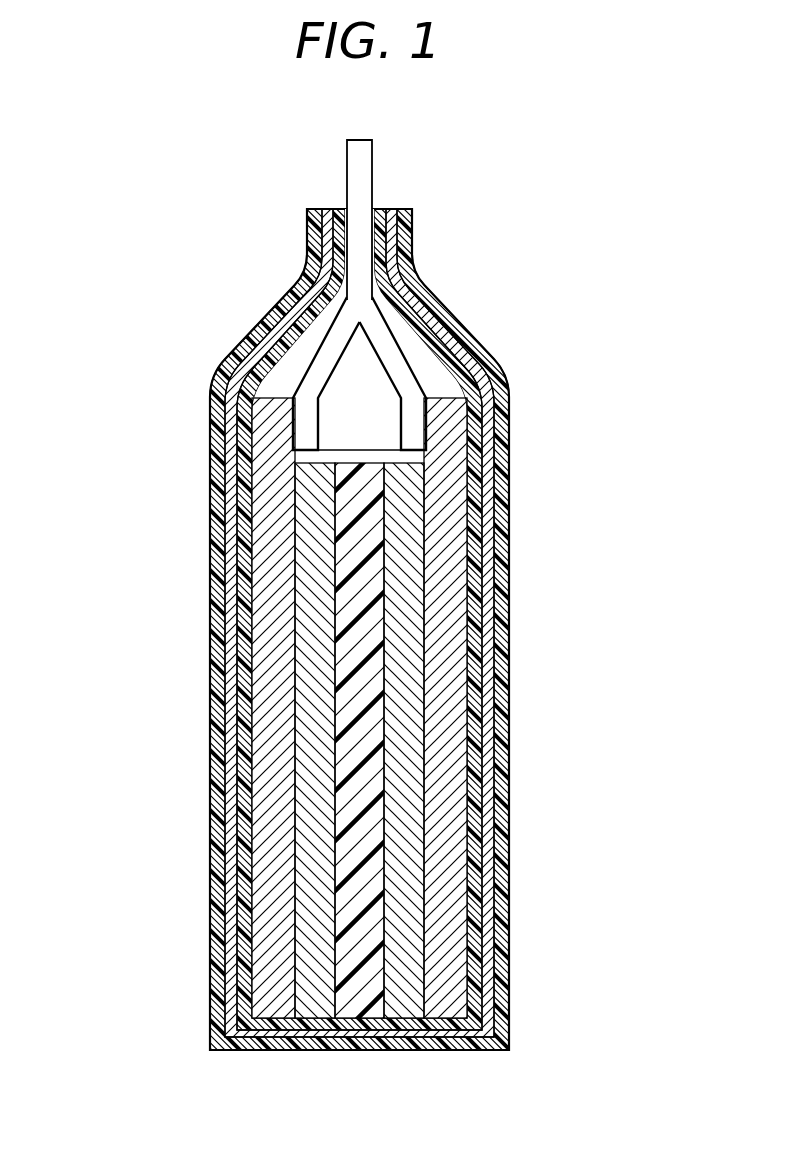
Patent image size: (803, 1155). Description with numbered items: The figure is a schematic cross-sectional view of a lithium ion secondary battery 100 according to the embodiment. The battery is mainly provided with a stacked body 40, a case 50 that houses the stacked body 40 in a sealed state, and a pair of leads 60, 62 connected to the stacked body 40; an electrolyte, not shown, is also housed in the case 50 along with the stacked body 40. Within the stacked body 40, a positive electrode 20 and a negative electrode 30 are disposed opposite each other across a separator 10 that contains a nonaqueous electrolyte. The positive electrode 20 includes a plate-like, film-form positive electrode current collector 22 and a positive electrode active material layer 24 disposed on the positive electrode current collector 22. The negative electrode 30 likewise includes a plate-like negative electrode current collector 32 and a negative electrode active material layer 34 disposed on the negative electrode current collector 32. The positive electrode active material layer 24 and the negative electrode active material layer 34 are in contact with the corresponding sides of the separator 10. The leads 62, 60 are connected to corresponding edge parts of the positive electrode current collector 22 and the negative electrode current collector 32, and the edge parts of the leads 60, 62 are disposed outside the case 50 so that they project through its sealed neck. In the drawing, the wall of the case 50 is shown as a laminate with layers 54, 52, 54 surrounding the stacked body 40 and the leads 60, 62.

The lithium ion secondary battery 100 is at (583, 175).
The case 50 is at (418, 629).
The resin layer of laminate film 54 is at (475, 652).
The metal layer of laminate film 52 is at (487, 670).
The stacked body 40 is at (255, 708).
The positive electrode 20 is at (279, 708).
The positive electrode current collector 22 is at (445, 550).
The positive electrode active material layer 24 is at (400, 590).
The separator 10 is at (348, 622).
The negative electrode 30 is at (213, 708).
The negative electrode active material layer 34 is at (310, 660).
The negative electrode current collector 32 is at (272, 687).
The lead 60 is at (330, 347).
The lead 62 is at (390, 345).